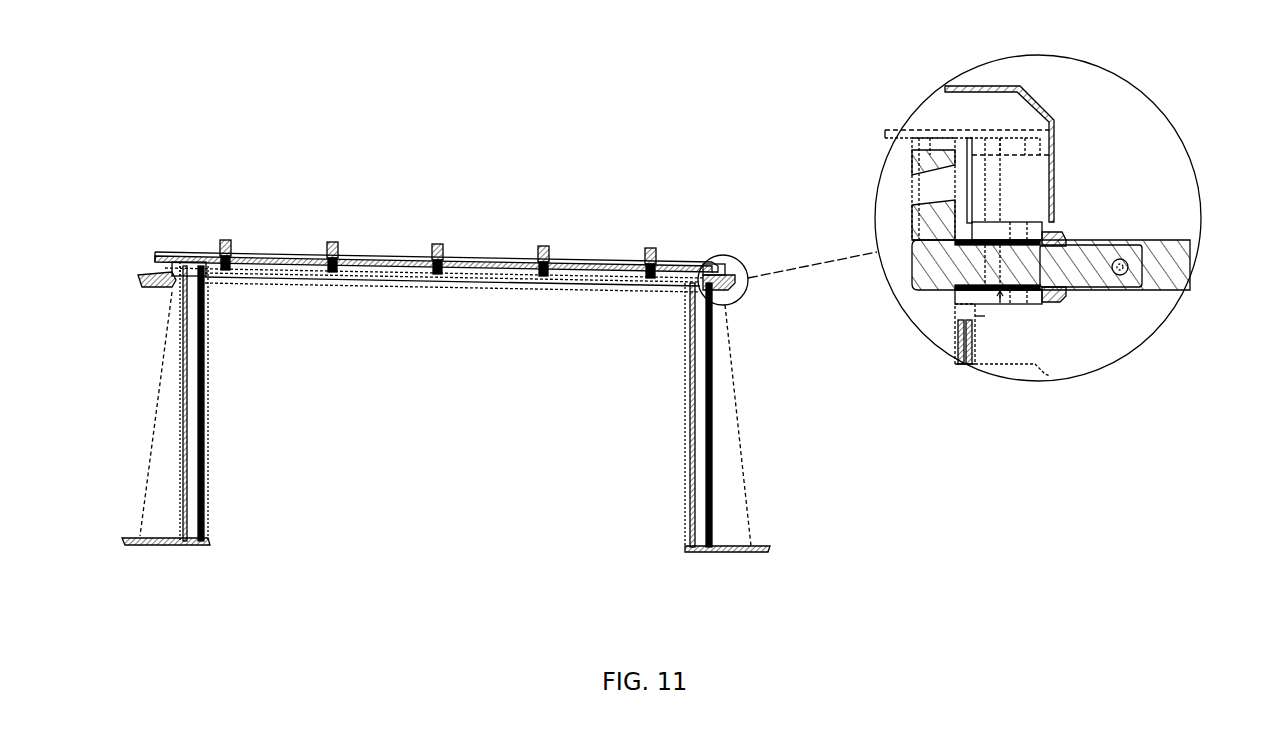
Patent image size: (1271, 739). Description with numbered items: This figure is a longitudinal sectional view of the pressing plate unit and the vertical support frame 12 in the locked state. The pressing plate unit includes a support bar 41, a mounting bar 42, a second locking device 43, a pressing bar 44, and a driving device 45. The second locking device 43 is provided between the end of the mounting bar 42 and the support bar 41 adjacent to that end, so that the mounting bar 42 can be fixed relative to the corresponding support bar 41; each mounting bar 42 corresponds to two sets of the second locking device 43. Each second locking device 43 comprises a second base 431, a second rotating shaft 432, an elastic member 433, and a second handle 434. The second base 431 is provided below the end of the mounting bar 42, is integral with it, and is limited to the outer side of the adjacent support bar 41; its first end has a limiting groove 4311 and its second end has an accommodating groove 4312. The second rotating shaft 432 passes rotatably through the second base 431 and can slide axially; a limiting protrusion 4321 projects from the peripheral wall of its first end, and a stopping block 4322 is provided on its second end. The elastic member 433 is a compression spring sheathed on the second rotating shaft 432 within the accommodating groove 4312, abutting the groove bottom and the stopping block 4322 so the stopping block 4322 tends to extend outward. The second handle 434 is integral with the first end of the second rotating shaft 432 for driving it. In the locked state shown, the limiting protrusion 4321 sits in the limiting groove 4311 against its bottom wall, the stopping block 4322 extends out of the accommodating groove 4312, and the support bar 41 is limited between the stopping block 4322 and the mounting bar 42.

The vertical support frame 12 is at (170, 418).
The support bar 41 is at (176, 262).
The mounting bar 42 is at (400, 262).
The second locking device 43 is at (138, 282).
The pressing bar 44 is at (400, 292).
The driving device 45 is at (330, 240).
The second base 431 is at (1025, 222).
The limiting groove 4311 is at (1066, 238).
The second rotating shaft 432 is at (958, 350).
The accommodating groove 4312 is at (1000, 304).
The limiting protrusion 4321 is at (1058, 300).
The stopping block 4322 is at (918, 265).
The elastic member 433 is at (1020, 304).
The second handle 434 is at (1128, 267).